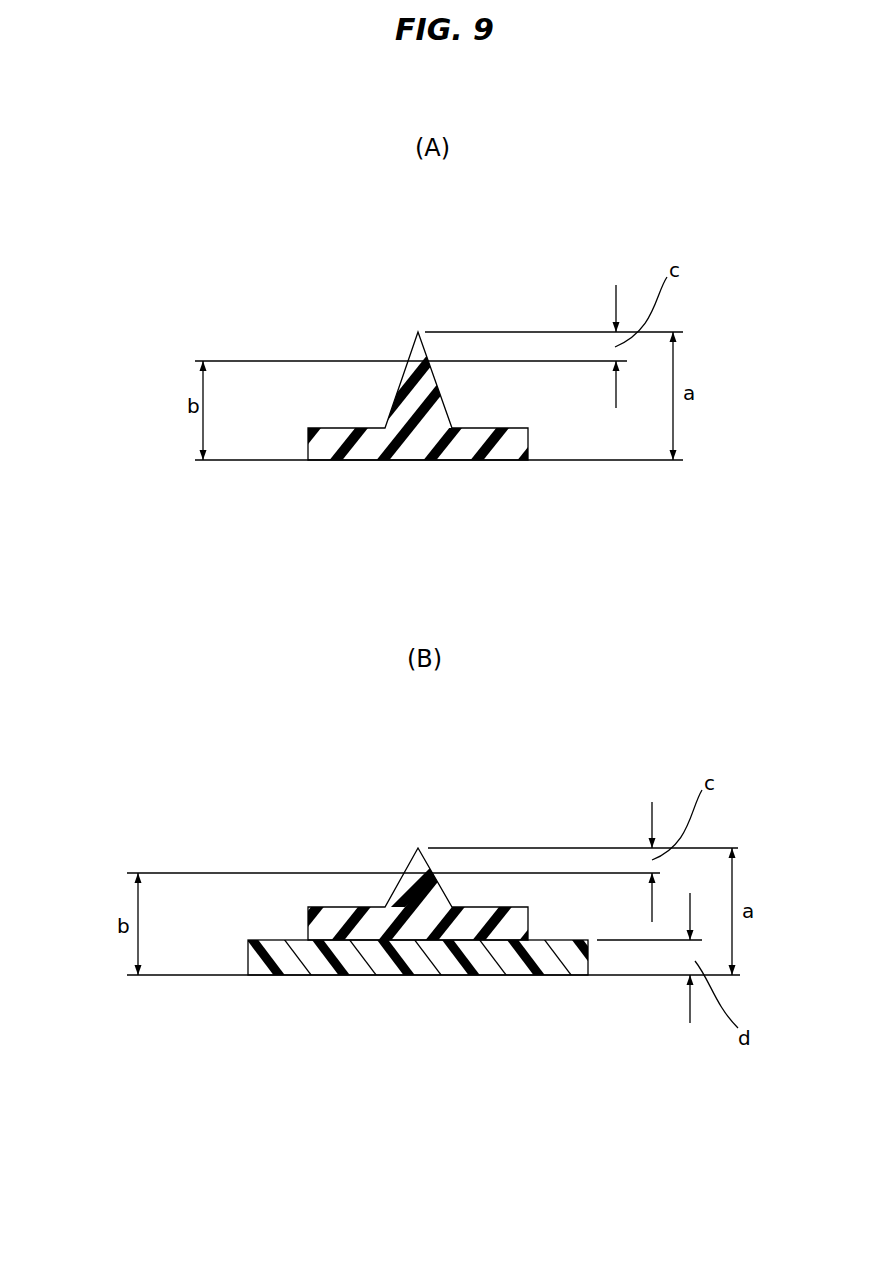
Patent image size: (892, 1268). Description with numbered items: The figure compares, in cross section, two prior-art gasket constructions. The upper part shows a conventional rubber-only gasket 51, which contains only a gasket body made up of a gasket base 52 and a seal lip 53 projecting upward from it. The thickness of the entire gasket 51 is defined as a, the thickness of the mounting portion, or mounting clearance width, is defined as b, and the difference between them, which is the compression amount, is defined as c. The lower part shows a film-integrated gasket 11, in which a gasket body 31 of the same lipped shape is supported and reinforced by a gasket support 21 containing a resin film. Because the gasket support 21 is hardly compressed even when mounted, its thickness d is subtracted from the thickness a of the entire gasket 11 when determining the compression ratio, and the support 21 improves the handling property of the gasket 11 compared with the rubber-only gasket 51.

The rubber-only gasket 51 is at (442, 381).
The gasket base 52 is at (455, 452).
The seal lip 53 is at (418, 352).
The film-integrated gasket 11 is at (420, 906).
The gasket support 21 is at (498, 965).
The gasket body 31 is at (435, 908).